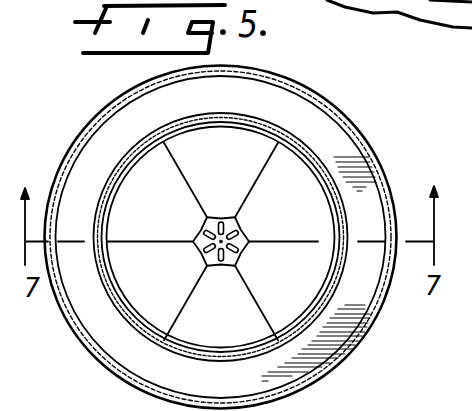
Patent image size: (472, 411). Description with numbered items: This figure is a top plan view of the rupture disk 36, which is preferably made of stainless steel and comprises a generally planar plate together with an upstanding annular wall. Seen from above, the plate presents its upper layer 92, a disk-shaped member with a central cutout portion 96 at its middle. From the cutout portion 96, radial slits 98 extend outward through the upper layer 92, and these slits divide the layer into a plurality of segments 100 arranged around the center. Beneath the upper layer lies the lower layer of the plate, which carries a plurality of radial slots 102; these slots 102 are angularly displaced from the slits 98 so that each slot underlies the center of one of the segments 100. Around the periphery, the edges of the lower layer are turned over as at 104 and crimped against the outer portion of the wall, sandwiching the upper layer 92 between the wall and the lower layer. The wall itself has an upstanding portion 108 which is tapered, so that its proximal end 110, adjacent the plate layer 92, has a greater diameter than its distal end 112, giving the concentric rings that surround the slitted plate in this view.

The rupture disk 36 is at (365, 335).
The upper layer 92 is at (228, 129).
The central cutout portion 96 is at (215, 216).
The radial slits 98 is at (160, 240).
The segments 100 is at (192, 174).
The radial slots 102 is at (238, 247).
The turned-over edges 104 is at (379, 163).
The upstanding portion 108 is at (284, 132).
The proximal end 110 is at (324, 163).
The distal end 112 is at (311, 155).